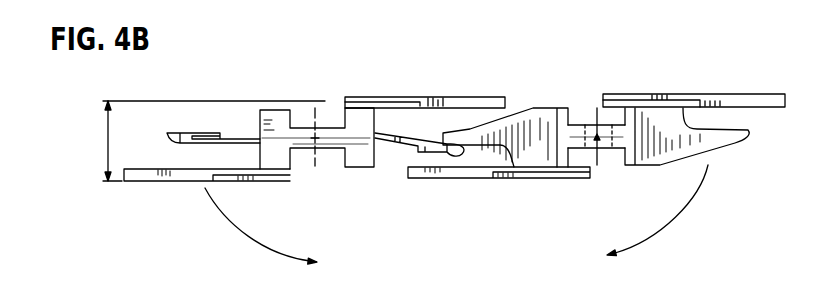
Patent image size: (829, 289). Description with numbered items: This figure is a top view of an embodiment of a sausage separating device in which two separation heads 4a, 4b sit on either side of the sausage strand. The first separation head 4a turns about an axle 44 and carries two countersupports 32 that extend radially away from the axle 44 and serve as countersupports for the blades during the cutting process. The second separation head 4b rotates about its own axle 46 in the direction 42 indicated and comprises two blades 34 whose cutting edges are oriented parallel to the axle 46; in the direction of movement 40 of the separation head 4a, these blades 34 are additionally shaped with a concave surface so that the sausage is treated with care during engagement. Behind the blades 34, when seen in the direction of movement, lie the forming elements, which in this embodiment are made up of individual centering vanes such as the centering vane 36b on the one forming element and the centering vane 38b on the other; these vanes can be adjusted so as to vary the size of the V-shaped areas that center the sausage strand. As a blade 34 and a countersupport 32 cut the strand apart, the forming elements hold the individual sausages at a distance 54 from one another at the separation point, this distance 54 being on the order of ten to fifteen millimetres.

The direction of movement 40 is at (305, 25).
The direction 42 is at (607, 22).
The distance 54 is at (108, 141).
The countersupport 32 is at (170, 140).
The centering vane 38b is at (170, 180).
The separation head 4a is at (296, 78).
The axle 44 is at (318, 120).
The blade 34 is at (526, 126).
The separation head 4b is at (569, 82).
The axle 46 is at (593, 117).
The centering vane 36b is at (765, 108).